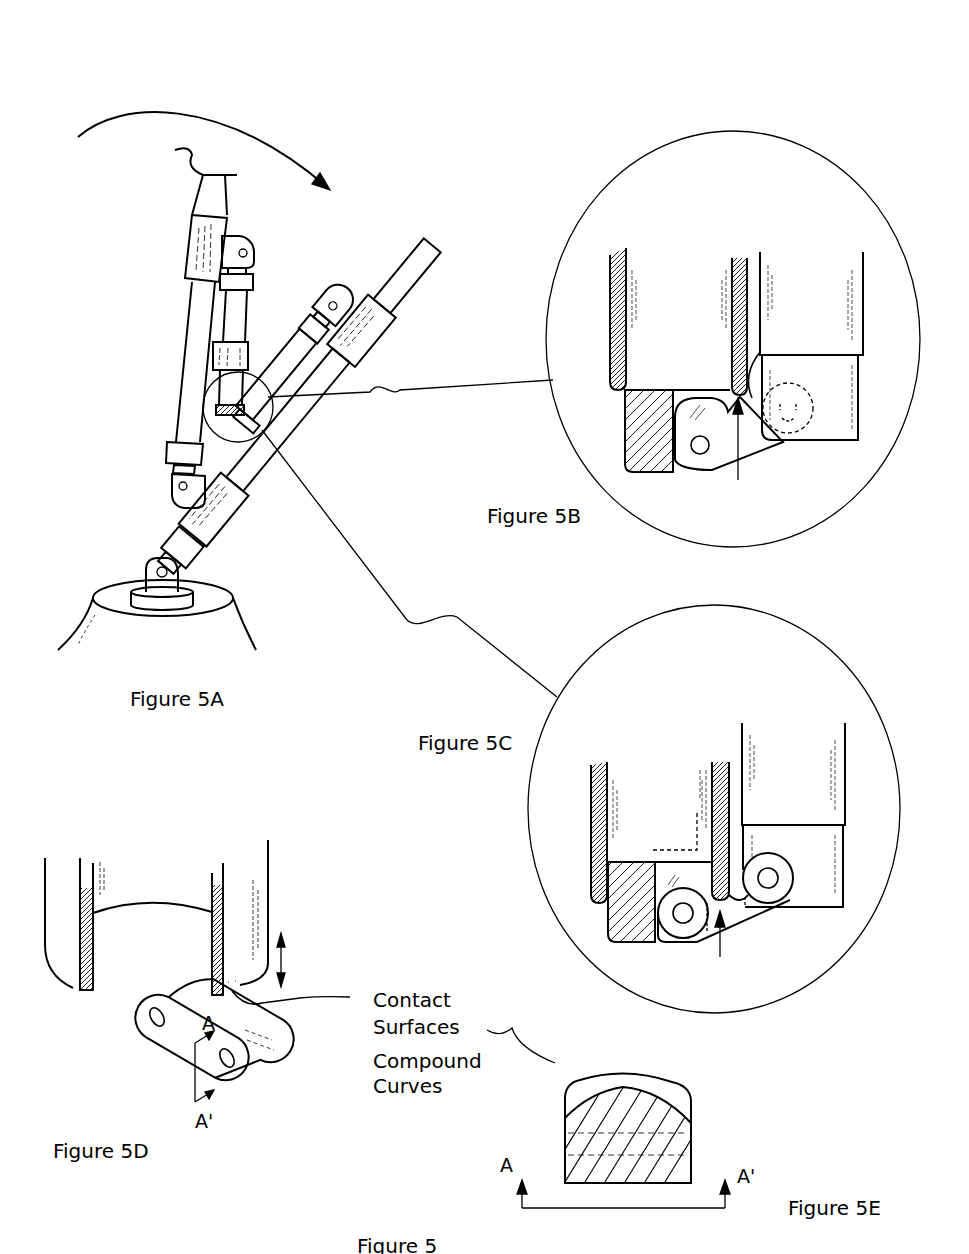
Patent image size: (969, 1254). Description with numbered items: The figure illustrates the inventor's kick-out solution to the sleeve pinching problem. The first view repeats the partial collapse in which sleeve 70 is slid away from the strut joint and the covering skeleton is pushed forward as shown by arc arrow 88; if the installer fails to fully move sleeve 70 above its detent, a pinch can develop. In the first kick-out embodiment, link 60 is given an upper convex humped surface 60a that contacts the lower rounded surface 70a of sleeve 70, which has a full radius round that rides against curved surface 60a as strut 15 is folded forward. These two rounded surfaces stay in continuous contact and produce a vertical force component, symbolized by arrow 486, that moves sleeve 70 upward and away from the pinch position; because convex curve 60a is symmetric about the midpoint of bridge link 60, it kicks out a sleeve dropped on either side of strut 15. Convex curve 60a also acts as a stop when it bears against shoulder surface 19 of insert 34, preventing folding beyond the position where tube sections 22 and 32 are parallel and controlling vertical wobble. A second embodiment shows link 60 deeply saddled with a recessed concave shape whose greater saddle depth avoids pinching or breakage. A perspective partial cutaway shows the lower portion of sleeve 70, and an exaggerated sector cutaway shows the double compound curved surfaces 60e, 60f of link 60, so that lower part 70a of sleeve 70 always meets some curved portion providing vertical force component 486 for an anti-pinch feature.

In FIG. 5A, the arc arrow 88 is at (240, 122).
In FIG. 5A, the sleeve 70 is at (230, 350).
In FIG. 5B, the sleeve 70 is at (610, 327).
In FIG. 5C, the sleeve 70 is at (592, 787).
In FIG. 5D, the sleeve 70 is at (247, 877).
In FIG. 5B, the tube section 22 is at (645, 287).
In FIG. 5C, the tube section 22 is at (665, 767).
In FIG. 5B, the strut 15 is at (739, 357).
In FIG. 5C, the strut 15 is at (721, 815).
In FIG. 5B, the shoulder surface 19 is at (740, 397).
In FIG. 5B, the convex surface 60a is at (758, 353).
In FIG. 5B, the tube section 32 is at (835, 355).
In FIG. 5C, the tube section 32 is at (827, 818).
In FIG. 5B, the lower rounded surface 70a is at (755, 438).
In FIG. 5B, the arrow 486 is at (740, 470).
In FIG. 5C, the arrow 486 is at (720, 940).
In FIG. 5D, the arrow 486 is at (282, 967).
In FIG. 5B, the insert 34 is at (650, 468).
In FIG. 5C, the insert 34 is at (630, 937).
In FIG. 5B, the link 60 is at (700, 463).
In FIG. 5C, the link 60 is at (750, 913).
In FIG. 5D, the link 60 is at (180, 1040).
In FIG. 5E, the double compound curved surface 60e is at (668, 1078).
In FIG. 5E, the double compound curved surface 60f is at (675, 1102).